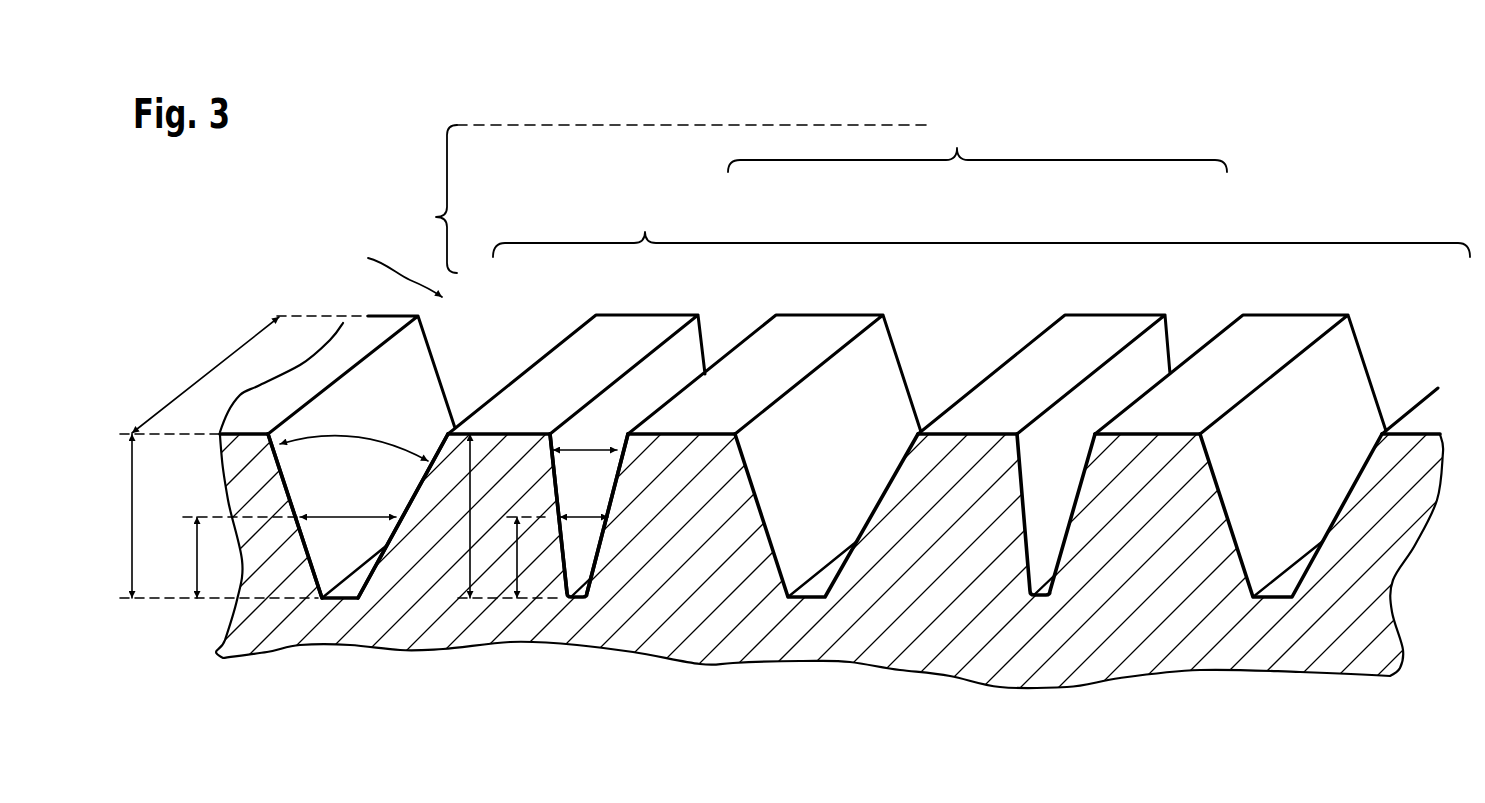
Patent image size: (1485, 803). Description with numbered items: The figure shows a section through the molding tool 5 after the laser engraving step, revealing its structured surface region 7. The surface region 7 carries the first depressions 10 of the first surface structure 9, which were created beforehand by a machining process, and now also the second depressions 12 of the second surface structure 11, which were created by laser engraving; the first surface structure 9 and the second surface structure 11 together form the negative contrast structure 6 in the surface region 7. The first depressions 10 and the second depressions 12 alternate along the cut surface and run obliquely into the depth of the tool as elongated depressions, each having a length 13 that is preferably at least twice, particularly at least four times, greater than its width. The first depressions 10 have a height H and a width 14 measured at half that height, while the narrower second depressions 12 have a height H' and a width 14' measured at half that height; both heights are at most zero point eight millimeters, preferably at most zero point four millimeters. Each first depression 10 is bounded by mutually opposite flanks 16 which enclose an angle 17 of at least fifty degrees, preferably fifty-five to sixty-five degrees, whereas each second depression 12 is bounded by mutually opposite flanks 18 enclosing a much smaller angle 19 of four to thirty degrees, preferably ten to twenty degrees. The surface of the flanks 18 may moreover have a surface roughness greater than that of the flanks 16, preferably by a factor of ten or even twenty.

The molding tool 5 is at (998, 681).
The negative contrast structure 6 is at (667, 199).
The surface region 7 is at (392, 267).
The first surface structure 9 is at (981, 230).
The first depressions 10 is at (497, 372).
The second surface structure 11 is at (977, 144).
The second depressions 12 is at (731, 335).
The length 13 is at (218, 363).
The width of the first depression 14 is at (348, 483).
The width of the second depression 14' is at (590, 629).
The flanks of the first depression 16 is at (316, 598).
The angle of the first depression 17 is at (358, 438).
The flanks of the second depression 18 is at (566, 555).
The angle of the second depression 19 is at (598, 448).
The height of the first depression H is at (209, 516).
The height of the second depression H' is at (495, 566).